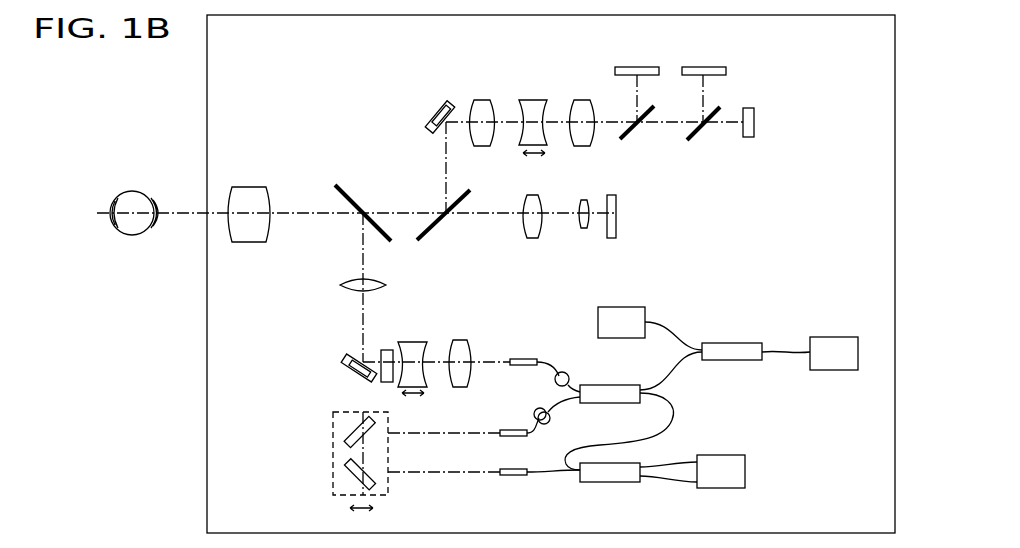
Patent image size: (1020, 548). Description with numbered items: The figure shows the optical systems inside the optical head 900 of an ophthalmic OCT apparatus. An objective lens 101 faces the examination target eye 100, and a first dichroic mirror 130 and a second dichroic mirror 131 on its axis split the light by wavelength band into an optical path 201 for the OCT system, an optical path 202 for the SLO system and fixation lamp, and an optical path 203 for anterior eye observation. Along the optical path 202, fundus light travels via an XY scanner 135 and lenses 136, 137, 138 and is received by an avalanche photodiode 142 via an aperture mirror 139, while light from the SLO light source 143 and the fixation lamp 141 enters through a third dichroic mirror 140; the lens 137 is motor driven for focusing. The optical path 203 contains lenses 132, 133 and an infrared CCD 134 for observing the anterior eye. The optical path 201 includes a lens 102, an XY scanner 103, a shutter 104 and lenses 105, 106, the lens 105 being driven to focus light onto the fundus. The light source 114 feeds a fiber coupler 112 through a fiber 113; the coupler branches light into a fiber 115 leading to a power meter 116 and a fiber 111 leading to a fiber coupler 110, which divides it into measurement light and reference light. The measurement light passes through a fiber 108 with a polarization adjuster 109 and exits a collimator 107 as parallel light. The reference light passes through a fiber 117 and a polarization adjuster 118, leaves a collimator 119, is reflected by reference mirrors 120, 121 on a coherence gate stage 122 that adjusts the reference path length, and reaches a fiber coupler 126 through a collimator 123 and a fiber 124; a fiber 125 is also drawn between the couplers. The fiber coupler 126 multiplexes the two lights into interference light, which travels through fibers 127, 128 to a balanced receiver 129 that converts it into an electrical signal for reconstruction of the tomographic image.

The optical head 900 is at (207, 82).
The examination target eye 100 is at (140, 233).
The objective lens 101 is at (245, 242).
The lens 102 is at (340, 285).
The XY scanner 103 is at (344, 362).
The shutter 104 is at (387, 350).
The lens 105 is at (415, 345).
The lens 106 is at (462, 344).
The collimator 107 is at (522, 359).
The fiber 108 is at (557, 372).
The polarization adjuster 109 is at (566, 380).
The fiber coupler 110 is at (620, 386).
The fiber 111 is at (668, 364).
The fiber coupler 112 is at (737, 343).
The fiber 113 is at (785, 352).
The light source 114 is at (843, 337).
The fiber 115 is at (664, 332).
The power meter 116 is at (625, 312).
The fiber 117 is at (578, 400).
The polarization adjuster 118 is at (534, 412).
The collimator 119 is at (508, 436).
The reference mirror 120 is at (345, 444).
The reference mirror 121 is at (348, 462).
The coherence gate stage 122 is at (335, 478).
The collimator 123 is at (507, 476).
The fiber 124 is at (550, 474).
The optical fiber 125 is at (674, 404).
The fiber coupler 126 is at (616, 482).
The fiber 127 is at (665, 466).
The fiber 128 is at (672, 478).
The balanced receiver 129 is at (745, 470).
The first dichroic mirror 130 is at (352, 195).
The second dichroic mirror 131 is at (424, 244).
The lens 132 is at (531, 238).
The lens 133 is at (586, 228).
The infrared CCD 134 is at (616, 206).
The XY scanner 135 is at (430, 113).
The lens 136 is at (482, 104).
The lens 137 is at (533, 104).
The lens 138 is at (578, 104).
The aperture mirror 139 is at (632, 134).
The third dichroic mirror 140 is at (699, 136).
The fixation lamp 141 is at (754, 112).
The avalanche photodiode 142 is at (622, 68).
The SLO light source 143 is at (690, 68).
The optical path 201 is at (362, 250).
The optical path 202 is at (446, 172).
The optical path 203 is at (482, 213).